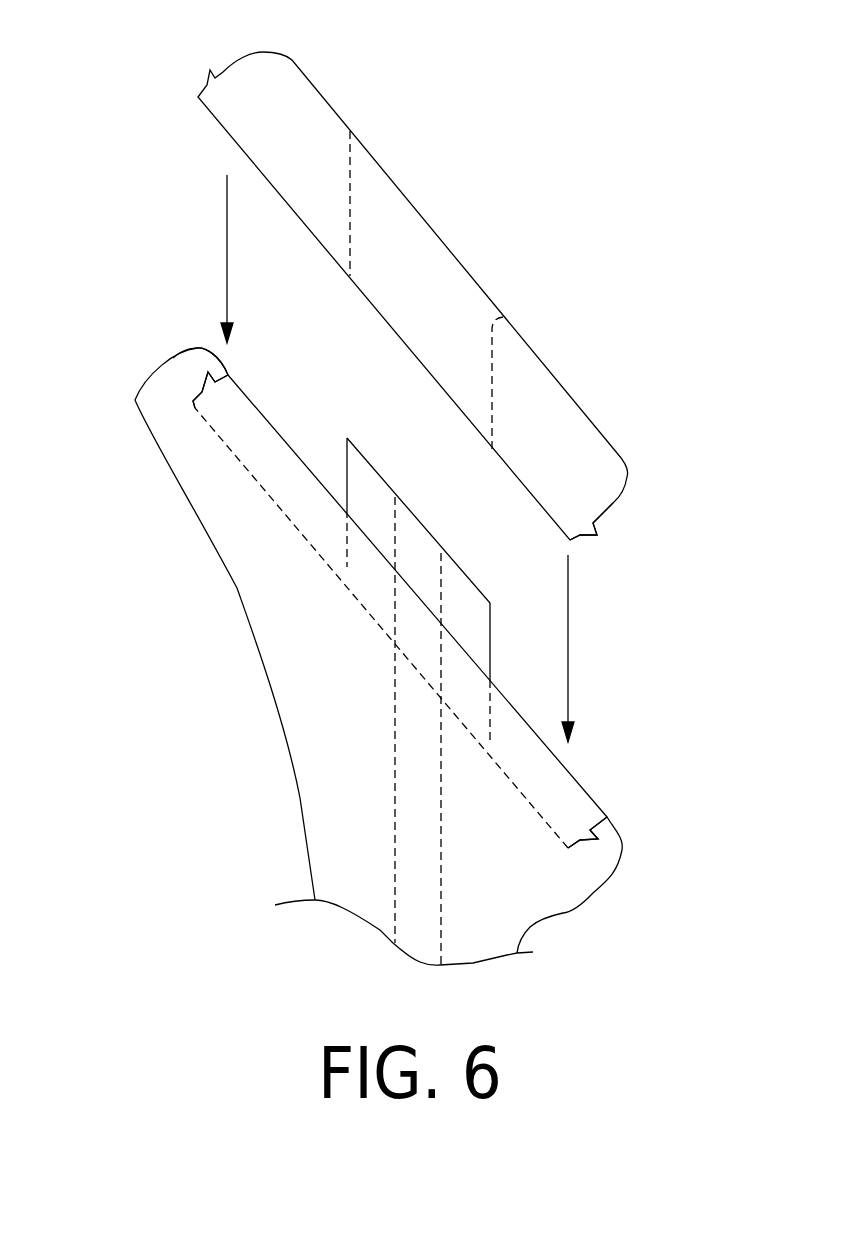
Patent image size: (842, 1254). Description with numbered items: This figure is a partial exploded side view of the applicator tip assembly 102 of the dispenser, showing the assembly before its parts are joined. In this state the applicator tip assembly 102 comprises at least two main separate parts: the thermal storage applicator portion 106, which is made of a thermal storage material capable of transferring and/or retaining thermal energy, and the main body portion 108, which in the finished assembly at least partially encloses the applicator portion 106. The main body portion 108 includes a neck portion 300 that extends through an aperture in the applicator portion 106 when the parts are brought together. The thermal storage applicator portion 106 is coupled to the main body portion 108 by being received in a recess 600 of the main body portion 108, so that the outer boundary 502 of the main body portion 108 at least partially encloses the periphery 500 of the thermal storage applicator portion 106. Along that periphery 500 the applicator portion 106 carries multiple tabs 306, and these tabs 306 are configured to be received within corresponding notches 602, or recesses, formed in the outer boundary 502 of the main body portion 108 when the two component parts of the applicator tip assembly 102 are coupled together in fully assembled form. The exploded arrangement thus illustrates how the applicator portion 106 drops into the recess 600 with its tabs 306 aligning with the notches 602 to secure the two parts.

The applicator tip assembly 102 is at (623, 142).
The thermal storage applicator portion 106 is at (570, 415).
The main body portion 108 is at (275, 652).
The neck portion 300 is at (383, 503).
The tabs 306 is at (593, 532).
The periphery 500 is at (238, 62).
The outer boundary 502 is at (192, 368).
The recess 600 is at (550, 788).
The notches 602 is at (588, 833).